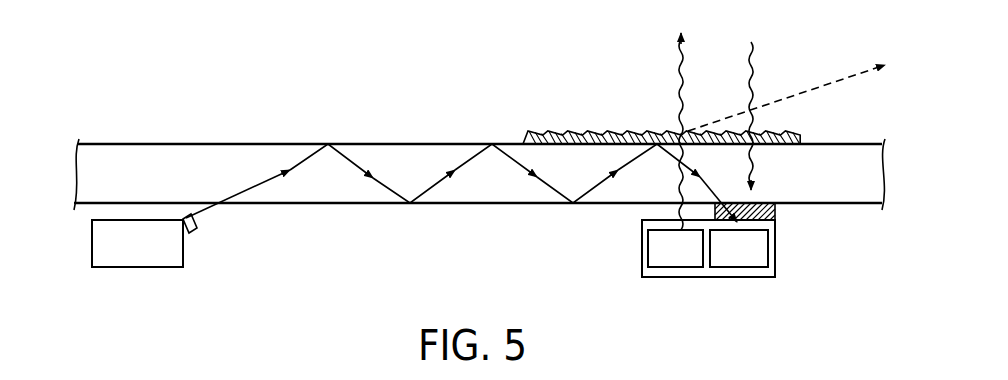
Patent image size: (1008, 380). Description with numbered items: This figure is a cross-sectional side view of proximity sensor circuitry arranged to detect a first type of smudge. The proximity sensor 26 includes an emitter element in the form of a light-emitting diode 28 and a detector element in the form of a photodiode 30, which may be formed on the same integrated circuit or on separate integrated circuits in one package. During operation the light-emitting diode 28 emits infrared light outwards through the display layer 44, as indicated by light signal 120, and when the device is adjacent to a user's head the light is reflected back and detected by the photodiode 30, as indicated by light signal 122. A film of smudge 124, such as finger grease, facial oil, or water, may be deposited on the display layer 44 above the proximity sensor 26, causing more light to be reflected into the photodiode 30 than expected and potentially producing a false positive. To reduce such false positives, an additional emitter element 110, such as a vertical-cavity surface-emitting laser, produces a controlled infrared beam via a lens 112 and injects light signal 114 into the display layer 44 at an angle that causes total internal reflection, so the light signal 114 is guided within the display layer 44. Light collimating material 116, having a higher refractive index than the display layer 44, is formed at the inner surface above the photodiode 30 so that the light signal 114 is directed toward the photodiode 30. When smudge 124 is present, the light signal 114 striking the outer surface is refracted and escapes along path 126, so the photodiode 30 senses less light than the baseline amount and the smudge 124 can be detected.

The proximity sensor 26 is at (776, 258).
The light-emitting diode 28 is at (680, 268).
The photodiode 30 is at (732, 268).
The display layer 44 is at (63, 140).
The emitter element 110 is at (183, 273).
The lens 112 is at (191, 233).
The light signal 114 is at (207, 217).
The light collimating material 116 is at (775, 212).
The light signal 120 is at (680, 66).
The light signal 122 is at (755, 42).
The smudge 124 is at (526, 142).
The path 126 is at (811, 90).